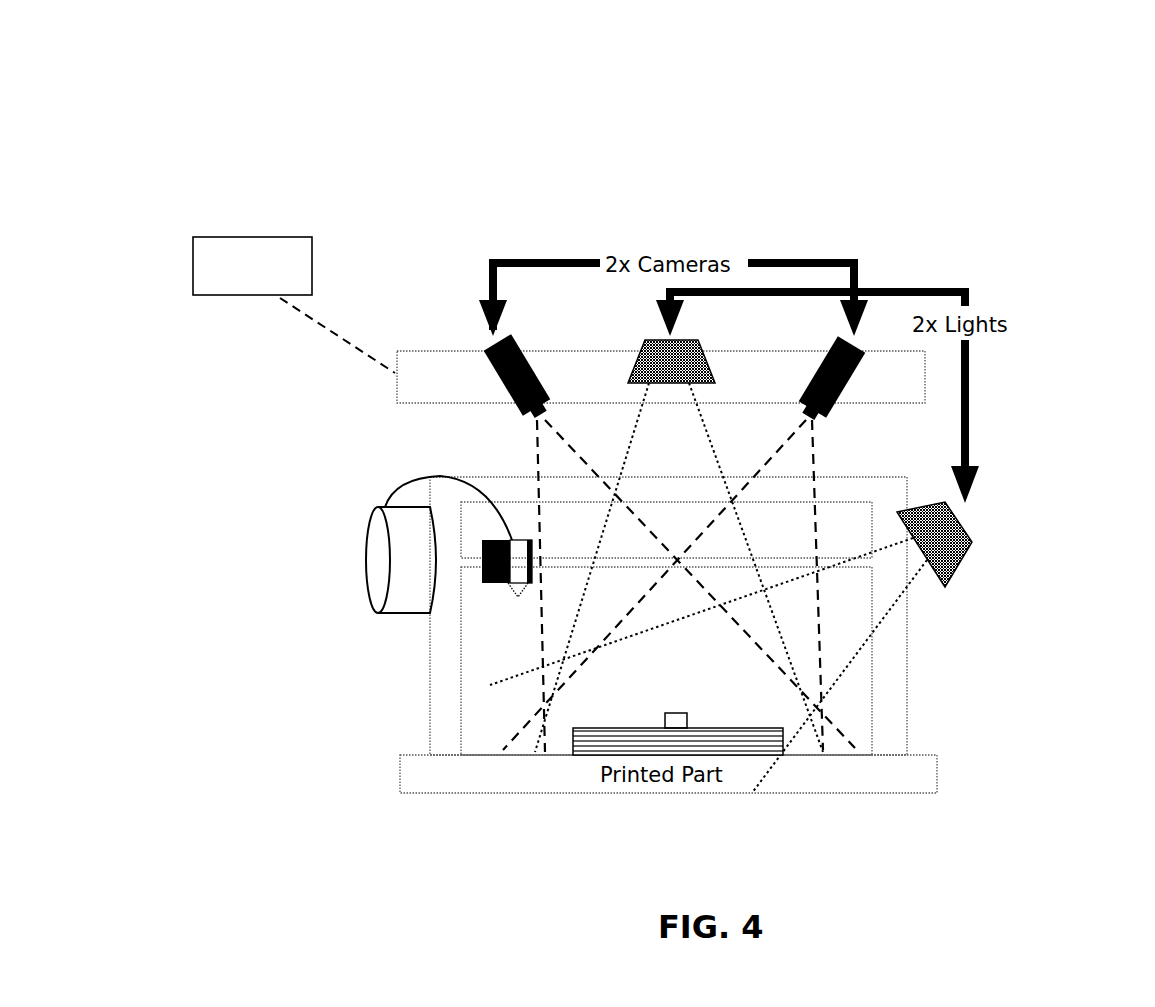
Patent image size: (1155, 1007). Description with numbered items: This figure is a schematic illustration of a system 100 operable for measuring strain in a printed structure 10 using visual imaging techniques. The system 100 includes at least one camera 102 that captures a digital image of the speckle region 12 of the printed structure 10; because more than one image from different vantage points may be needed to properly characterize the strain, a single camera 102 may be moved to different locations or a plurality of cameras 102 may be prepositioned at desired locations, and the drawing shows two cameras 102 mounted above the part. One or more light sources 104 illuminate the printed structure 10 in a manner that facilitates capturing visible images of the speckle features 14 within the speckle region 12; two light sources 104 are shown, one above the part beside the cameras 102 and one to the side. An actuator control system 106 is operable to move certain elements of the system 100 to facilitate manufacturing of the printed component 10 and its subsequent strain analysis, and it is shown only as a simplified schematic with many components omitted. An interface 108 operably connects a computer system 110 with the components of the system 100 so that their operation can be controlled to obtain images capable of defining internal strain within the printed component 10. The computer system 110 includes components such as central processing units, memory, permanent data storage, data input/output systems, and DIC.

The system 100 is at (852, 86).
The computer system 110 is at (251, 237).
The interface 108 is at (413, 365).
The camera 102 is at (513, 338).
The light source 104 is at (690, 345).
The actuator control system 106 is at (377, 558).
The printed structure 10 is at (590, 752).
The speckle region 12 is at (661, 725).
The speckle features 14 is at (676, 713).